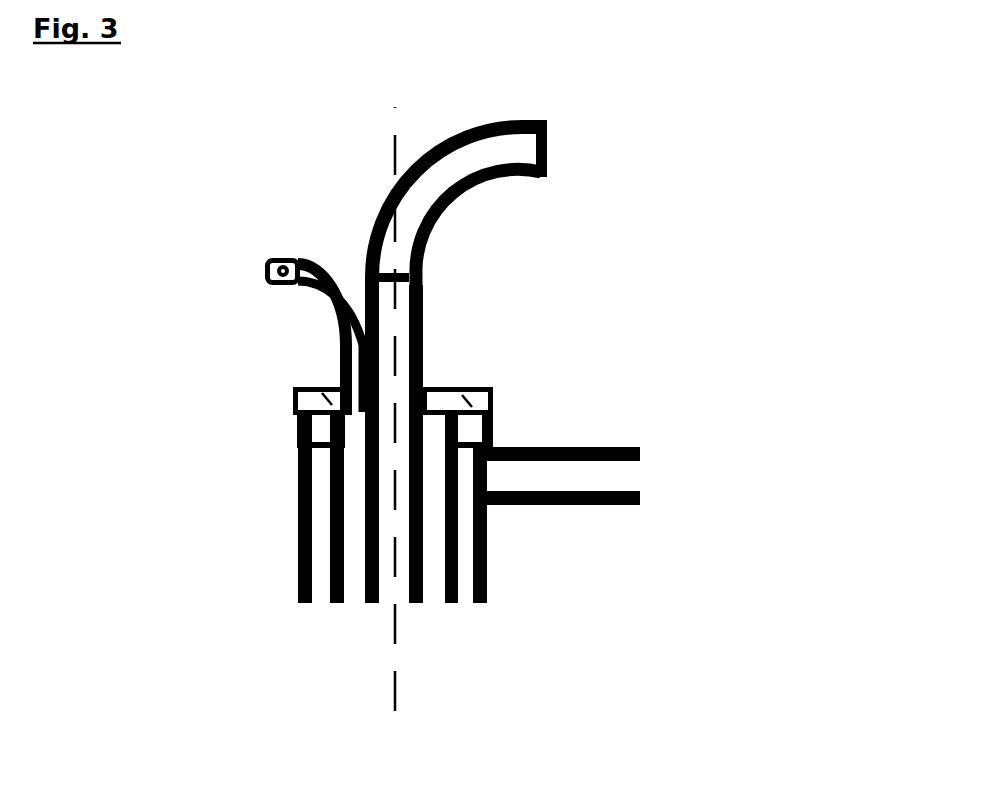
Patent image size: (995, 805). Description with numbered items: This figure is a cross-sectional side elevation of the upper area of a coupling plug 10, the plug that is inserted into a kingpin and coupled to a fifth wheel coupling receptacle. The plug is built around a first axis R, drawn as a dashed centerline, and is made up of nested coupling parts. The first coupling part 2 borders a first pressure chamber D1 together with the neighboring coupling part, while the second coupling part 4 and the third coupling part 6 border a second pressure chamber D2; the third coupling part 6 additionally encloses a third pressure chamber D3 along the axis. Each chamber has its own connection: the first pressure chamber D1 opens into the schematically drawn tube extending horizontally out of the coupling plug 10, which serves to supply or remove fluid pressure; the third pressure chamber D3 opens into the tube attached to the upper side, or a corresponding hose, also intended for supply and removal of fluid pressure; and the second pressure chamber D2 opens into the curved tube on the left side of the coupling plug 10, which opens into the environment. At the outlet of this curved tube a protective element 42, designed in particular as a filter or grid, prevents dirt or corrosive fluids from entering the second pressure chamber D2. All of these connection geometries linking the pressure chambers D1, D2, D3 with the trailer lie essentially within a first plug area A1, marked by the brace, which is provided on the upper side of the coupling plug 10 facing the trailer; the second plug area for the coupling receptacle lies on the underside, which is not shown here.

The first coupling part 2 is at (483, 527).
The second coupling part 4 is at (342, 570).
The third coupling part 6 is at (368, 593).
The coupling plug 10 is at (612, 388).
The protective element 42 is at (286, 258).
The first axis R is at (395, 125).
The first plug area A1 is at (278, 390).
The first pressure chamber D1 is at (463, 567).
The second pressure chamber D2 is at (432, 580).
The third pressure chamber D3 is at (390, 443).